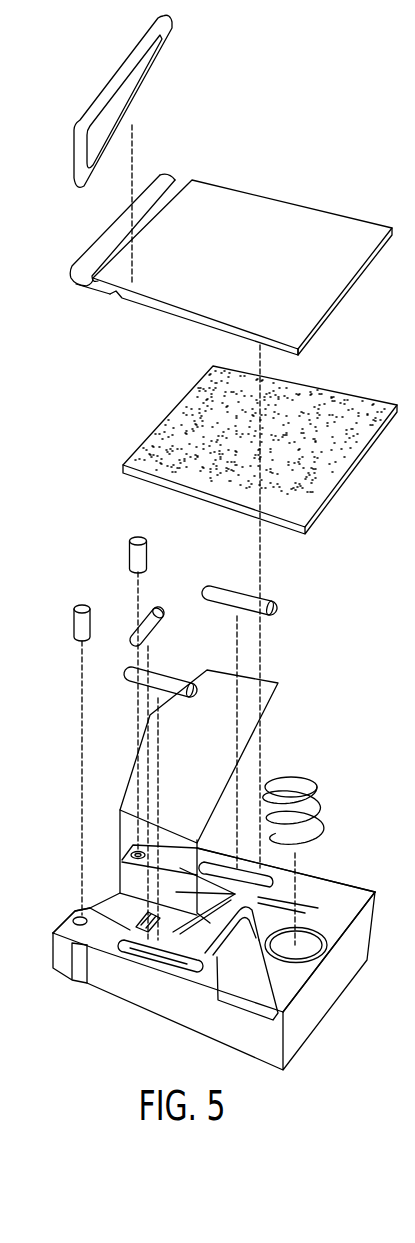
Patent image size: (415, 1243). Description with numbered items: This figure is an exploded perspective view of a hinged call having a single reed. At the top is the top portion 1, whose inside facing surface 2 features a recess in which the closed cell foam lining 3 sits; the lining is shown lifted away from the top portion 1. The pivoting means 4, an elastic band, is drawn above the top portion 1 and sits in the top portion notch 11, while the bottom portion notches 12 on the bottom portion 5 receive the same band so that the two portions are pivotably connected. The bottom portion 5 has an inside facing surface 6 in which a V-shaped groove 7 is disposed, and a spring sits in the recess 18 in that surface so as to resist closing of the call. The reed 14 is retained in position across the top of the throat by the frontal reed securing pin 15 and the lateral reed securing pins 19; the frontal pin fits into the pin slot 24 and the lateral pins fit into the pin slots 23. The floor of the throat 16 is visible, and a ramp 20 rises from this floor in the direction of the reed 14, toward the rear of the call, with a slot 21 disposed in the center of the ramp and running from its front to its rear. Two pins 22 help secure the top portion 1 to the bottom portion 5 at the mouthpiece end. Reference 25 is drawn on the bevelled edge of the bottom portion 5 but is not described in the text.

The top portion 1 is at (313, 220).
The inside facing surface 2 is at (277, 348).
The closed cell foam lining 3 is at (363, 404).
The pivoting means 4 is at (170, 51).
The bottom portion 5 is at (117, 988).
The inside facing surface 6 is at (313, 800).
The V-shaped groove 7 is at (343, 898).
The top portion notch 11 is at (179, 186).
The bottom portion notches 12 is at (77, 983).
The reed 14 is at (267, 683).
The frontal reed securing pin 15 is at (153, 618).
The floor of the throat 16 is at (117, 893).
The recess 18 is at (318, 948).
The lateral reed securing pins 19 is at (228, 593).
The ramp 20 is at (197, 876).
The slot 21 is at (173, 908).
The pins 22 is at (133, 553).
The pin slots 23 is at (178, 968).
The pin slot 24 is at (118, 901).
The bevel edge 25 is at (300, 995).